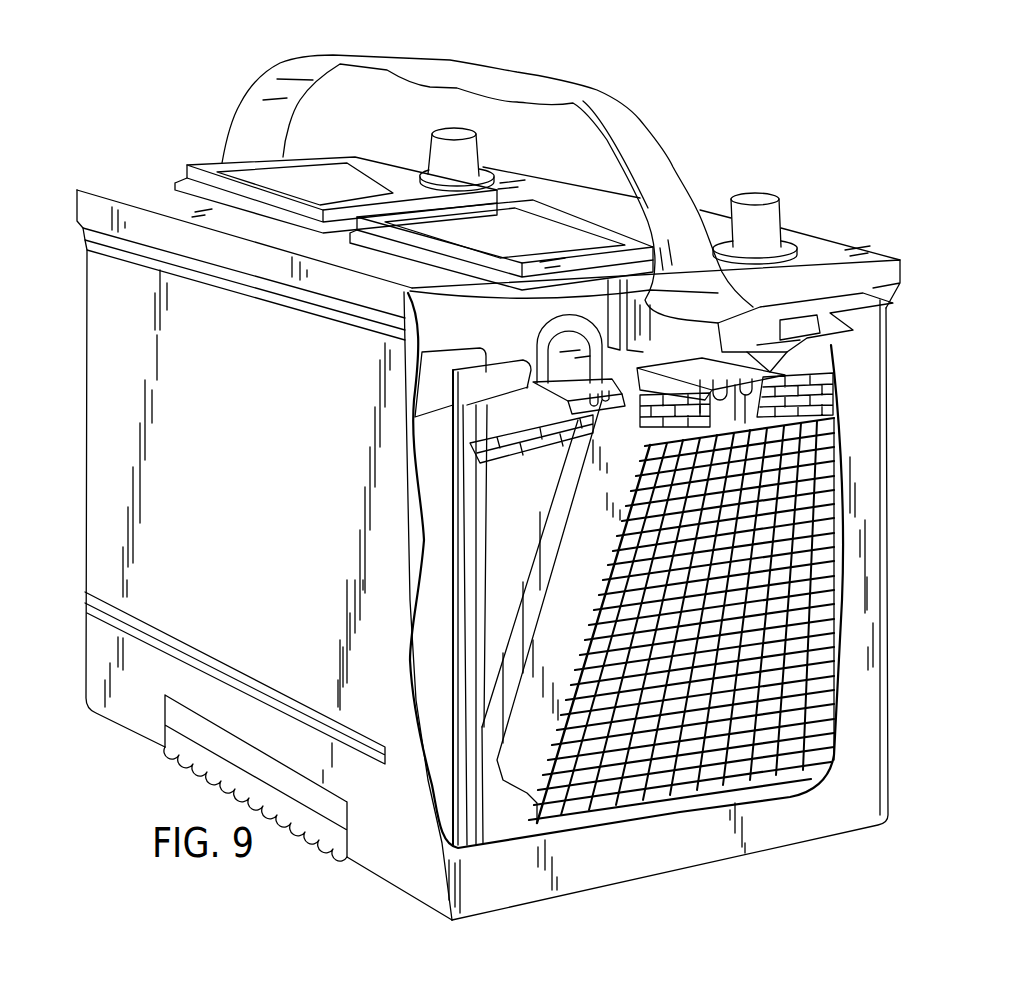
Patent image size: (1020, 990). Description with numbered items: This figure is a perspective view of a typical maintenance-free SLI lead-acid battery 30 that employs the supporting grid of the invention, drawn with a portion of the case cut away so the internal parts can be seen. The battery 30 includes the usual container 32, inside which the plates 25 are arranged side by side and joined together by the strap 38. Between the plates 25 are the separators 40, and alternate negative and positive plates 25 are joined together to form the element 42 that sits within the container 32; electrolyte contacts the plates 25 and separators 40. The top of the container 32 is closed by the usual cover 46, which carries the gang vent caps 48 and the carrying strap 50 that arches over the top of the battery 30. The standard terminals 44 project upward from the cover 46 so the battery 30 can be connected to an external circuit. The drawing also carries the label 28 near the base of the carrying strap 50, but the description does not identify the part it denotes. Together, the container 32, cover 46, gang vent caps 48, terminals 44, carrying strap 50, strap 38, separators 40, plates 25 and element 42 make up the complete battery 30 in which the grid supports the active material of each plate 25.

The plates 25 is at (757, 417).
The handle attachment post 28 is at (645, 208).
The battery 30 is at (76, 373).
The container 32 is at (873, 523).
The strap 38 is at (832, 342).
The separators 40 is at (480, 803).
The element 42 is at (470, 643).
The terminals 44 is at (480, 145).
The cover 46 is at (72, 190).
The gang vent caps 48 is at (202, 163).
The carrying strap 50 is at (415, 57).